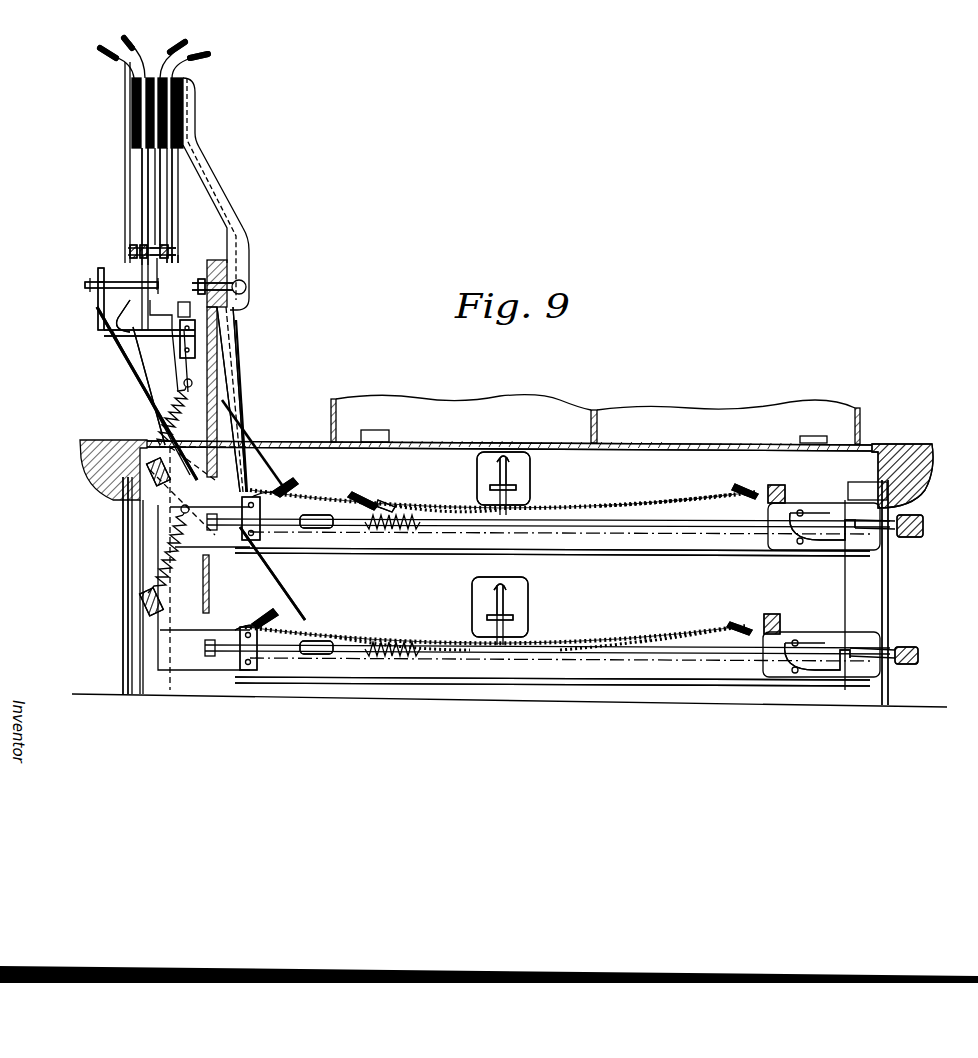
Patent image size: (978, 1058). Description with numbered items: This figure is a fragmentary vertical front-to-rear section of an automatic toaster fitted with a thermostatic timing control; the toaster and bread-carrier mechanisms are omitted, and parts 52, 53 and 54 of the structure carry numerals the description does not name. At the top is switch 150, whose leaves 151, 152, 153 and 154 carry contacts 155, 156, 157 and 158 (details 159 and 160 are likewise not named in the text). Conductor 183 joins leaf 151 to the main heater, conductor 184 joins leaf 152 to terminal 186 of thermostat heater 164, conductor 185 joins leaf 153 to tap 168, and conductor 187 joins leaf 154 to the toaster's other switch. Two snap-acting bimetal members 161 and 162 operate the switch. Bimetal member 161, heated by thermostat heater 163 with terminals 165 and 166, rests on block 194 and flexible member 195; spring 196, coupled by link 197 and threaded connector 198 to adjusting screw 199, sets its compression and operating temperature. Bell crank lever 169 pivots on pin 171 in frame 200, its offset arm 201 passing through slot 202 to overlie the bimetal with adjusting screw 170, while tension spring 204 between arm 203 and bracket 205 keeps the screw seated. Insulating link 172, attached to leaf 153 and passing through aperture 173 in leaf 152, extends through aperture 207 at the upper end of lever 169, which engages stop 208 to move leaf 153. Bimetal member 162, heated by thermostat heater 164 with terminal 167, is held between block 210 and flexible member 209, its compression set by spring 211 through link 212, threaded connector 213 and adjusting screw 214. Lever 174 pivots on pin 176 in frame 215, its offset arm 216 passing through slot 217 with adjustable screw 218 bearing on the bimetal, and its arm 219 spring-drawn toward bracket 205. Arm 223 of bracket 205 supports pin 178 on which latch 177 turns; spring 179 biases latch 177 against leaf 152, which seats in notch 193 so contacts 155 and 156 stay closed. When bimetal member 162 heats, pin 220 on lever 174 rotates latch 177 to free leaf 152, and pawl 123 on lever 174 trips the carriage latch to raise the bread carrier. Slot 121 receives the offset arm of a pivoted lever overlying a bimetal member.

The molding 52 is at (930, 469).
The cabinet side wall 53 is at (890, 587).
The top rail 54 is at (876, 446).
The slot 121 is at (185, 432).
The pawl 123 is at (198, 289).
The switch 150 is at (132, 112).
The leaf 151 is at (142, 160).
The leaf 152 is at (148, 185).
The leaf 153 is at (160, 167).
The leaf 154 is at (172, 182).
The contact 155 is at (131, 252).
The contact 156 is at (140, 246).
The contact 157 is at (166, 246).
The contact 158 is at (160, 250).
The fitting 159 is at (170, 253).
The fitting 160 is at (186, 268).
The bimetal member 161 is at (622, 643).
The bimetal member 162 is at (695, 500).
The thermostat heater 163 is at (686, 635).
The thermostat heater 164 is at (640, 503).
The terminal 165 is at (255, 625).
The terminal 166 is at (746, 622).
The terminal 167 is at (288, 483).
The tap 168 is at (384, 500).
The bell crank lever 169 is at (392, 639).
The adjusting screw 170 is at (508, 598).
The pin 171 is at (268, 672).
The insulating link 172 is at (118, 282).
The aperture 173 is at (120, 317).
The lever 174 is at (425, 501).
The pin 176 is at (272, 558).
The latch 177 is at (142, 378).
The pin 178 is at (168, 402).
The spring 179 is at (182, 361).
The conductor 183 is at (108, 61).
The conductor 184 is at (122, 42).
The conductor 185 is at (195, 45).
The terminal 186 is at (750, 489).
The conductor 187 is at (210, 61).
The notch 193 is at (135, 341).
The block 194 is at (782, 623).
The flexible member 195 is at (270, 613).
The spring 196 is at (396, 660).
The link 197 is at (318, 656).
The threaded connector 198 is at (836, 680).
The adjusting screw 199 is at (912, 649).
The frame 200 is at (640, 687).
The offset arm 201 is at (510, 616).
The slot 202 is at (476, 592).
The arm 203 is at (145, 623).
The tension spring 204 is at (160, 557).
The bracket 205 is at (232, 364).
The aperture 207 is at (96, 277).
The stop 208 is at (98, 293).
The flexible member 209 is at (245, 426).
The block 210 is at (786, 490).
The spring 211 is at (388, 532).
The link 212 is at (318, 530).
The threaded connector 213 is at (835, 547).
The adjusting screw 214 is at (916, 522).
The frame 215 is at (700, 557).
The offset arm 216 is at (512, 491).
The slot 217 is at (480, 470).
The adjustable screw 218 is at (510, 476).
The arm 219 is at (152, 489).
The pin 220 is at (135, 330).
The arm 223 is at (196, 334).